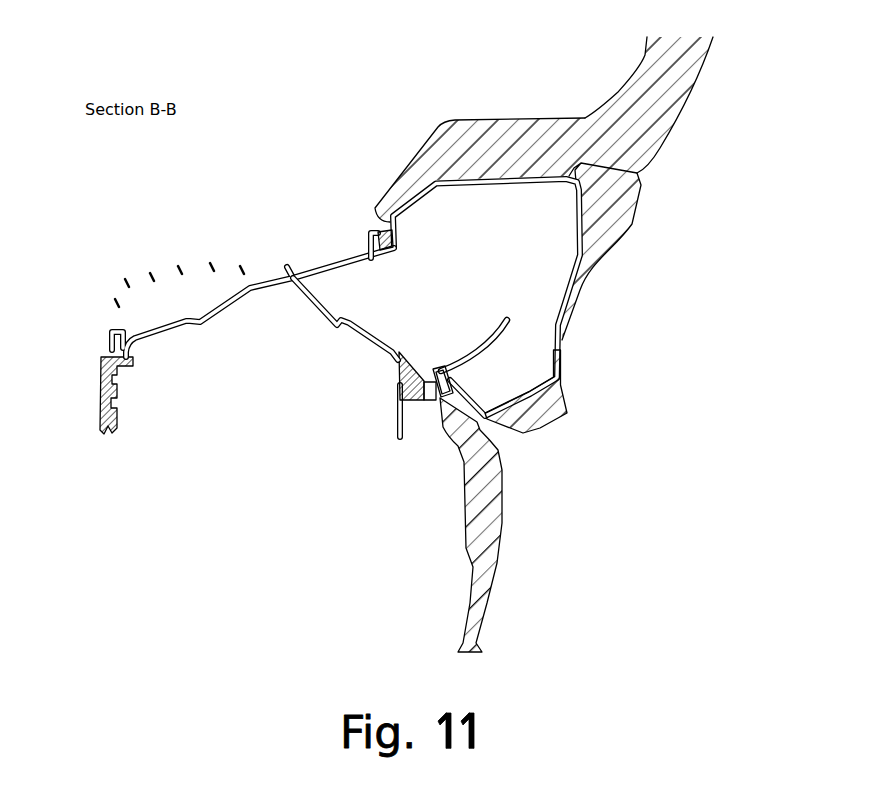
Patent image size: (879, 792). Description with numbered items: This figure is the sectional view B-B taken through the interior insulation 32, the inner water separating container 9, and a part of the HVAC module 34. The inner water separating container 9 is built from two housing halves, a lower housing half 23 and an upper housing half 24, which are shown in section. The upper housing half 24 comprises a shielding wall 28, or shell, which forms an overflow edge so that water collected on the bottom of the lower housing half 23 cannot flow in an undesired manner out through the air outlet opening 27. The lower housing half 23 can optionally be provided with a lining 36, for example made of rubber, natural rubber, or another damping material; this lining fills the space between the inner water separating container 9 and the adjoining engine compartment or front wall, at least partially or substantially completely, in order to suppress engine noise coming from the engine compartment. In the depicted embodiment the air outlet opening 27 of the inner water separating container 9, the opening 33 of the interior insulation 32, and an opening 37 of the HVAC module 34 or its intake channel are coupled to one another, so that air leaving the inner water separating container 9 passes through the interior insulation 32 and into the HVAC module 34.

The inner water separating container 9 is at (585, 402).
The lower housing half 23 is at (573, 290).
The upper housing half 24 is at (482, 213).
The air outlet opening 27 is at (445, 360).
The shielding wall 28 is at (503, 356).
The interior insulation 32 is at (652, 112).
The opening of the interior insulation 33 is at (396, 250).
The HVAC module 34 is at (119, 274).
The lining 36 is at (607, 216).
The opening of the HVAC module 37 is at (340, 297).